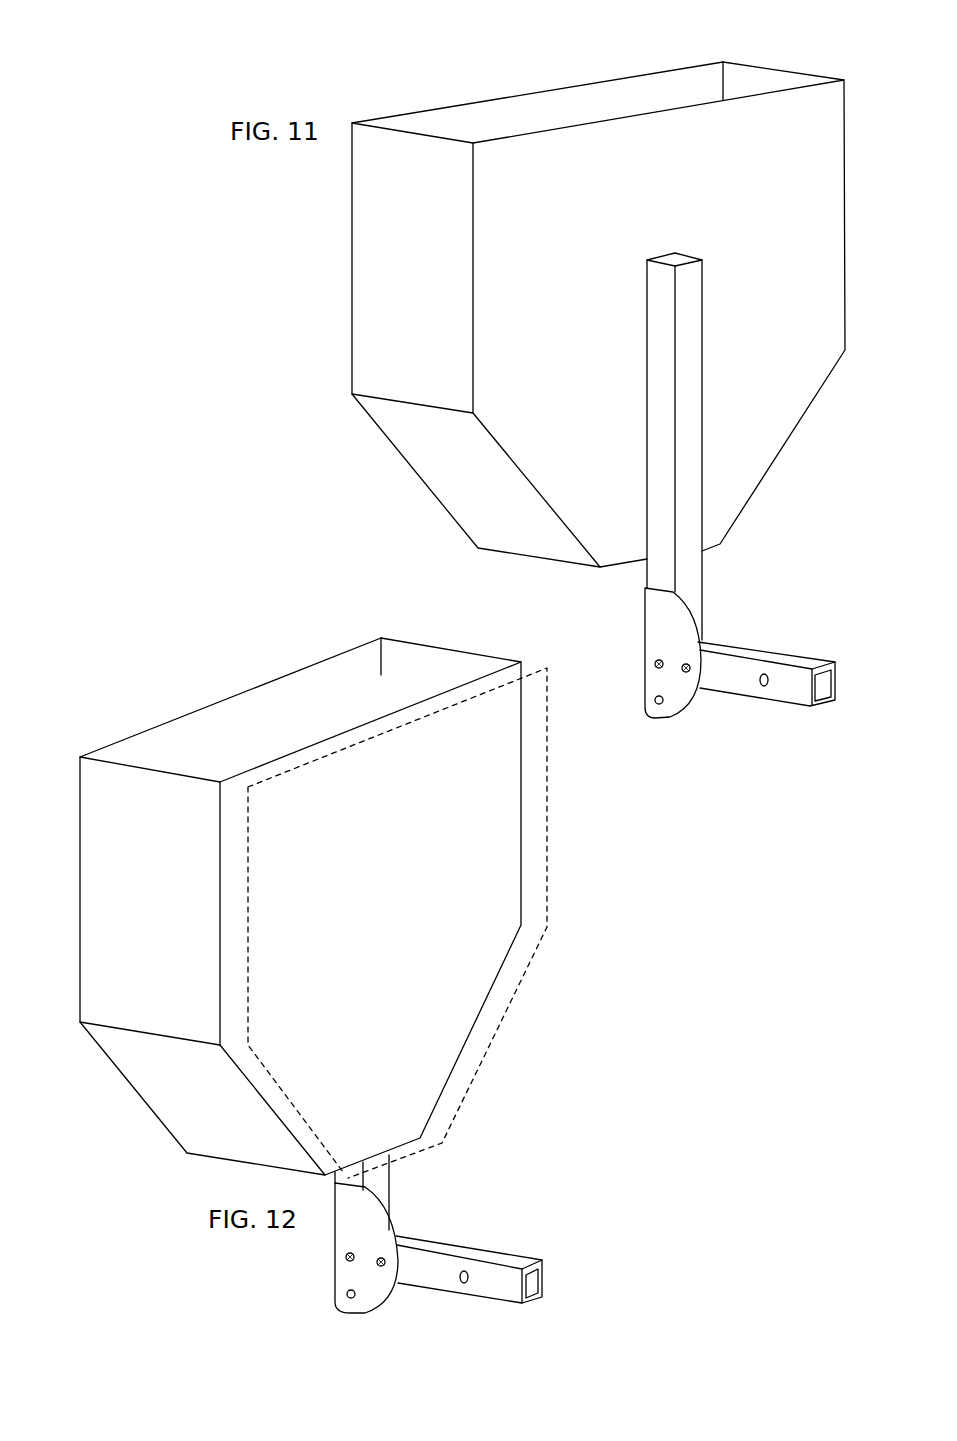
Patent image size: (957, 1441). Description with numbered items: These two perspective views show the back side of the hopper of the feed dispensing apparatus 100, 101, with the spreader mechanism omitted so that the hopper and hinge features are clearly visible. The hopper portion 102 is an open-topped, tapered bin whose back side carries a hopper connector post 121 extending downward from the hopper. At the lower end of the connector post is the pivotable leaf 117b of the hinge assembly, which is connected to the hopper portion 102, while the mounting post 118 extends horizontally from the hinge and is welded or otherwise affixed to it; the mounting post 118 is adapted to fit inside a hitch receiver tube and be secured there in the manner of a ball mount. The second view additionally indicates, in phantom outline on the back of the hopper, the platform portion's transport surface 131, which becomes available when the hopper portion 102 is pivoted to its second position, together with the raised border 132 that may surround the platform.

In FIG. 11, the feed dispensing apparatus 100 is at (553, 389).
In FIG. 11, the feed dispensing apparatus 101 is at (542, 291).
In FIG. 12, the feed dispensing apparatus 101 is at (116, 703).
In FIG. 11, the hopper portion 102 is at (793, 72).
In FIG. 11, the hopper connector post 121 is at (695, 447).
In FIG. 12, the hopper connector post 121 is at (380, 1178).
In FIG. 11, the mounting post 118 is at (755, 658).
In FIG. 12, the mounting post 118 is at (482, 1256).
In FIG. 11, the pivotable leaf 117b is at (688, 706).
In FIG. 12, the pivotable leaf 117b is at (375, 1300).
In FIG. 12, the transport surface 131 is at (458, 1046).
In FIG. 12, the raised border 132 is at (550, 825).